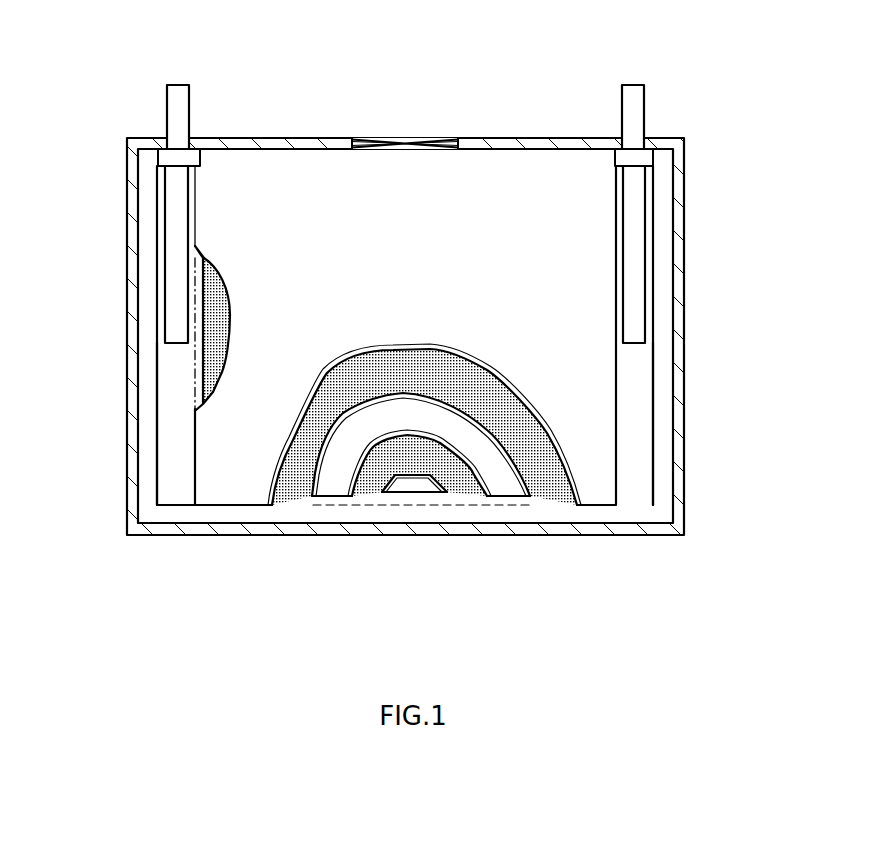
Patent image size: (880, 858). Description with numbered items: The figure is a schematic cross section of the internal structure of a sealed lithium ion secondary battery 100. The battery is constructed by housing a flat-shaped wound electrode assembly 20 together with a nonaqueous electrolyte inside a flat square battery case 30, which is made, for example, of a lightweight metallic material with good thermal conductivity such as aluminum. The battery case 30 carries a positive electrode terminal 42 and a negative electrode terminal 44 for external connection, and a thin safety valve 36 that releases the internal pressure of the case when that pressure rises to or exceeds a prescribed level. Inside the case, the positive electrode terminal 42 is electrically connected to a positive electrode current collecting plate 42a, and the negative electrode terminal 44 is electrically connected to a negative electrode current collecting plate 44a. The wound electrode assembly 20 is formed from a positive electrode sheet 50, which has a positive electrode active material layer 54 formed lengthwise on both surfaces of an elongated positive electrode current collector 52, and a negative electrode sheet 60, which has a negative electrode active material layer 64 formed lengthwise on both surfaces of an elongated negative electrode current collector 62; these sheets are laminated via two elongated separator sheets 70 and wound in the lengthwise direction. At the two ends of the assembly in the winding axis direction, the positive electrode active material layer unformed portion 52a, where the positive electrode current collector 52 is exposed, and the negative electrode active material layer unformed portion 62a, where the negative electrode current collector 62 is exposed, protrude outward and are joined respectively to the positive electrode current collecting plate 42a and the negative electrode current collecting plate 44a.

The lithium ion secondary battery 100 is at (686, 101).
The wound electrode assembly 20 is at (291, 194).
The battery case 30 is at (687, 248).
The safety valve 36 is at (405, 139).
The positive electrode terminal 42 is at (178, 90).
The positive electrode current collecting plate 42a is at (178, 232).
The negative electrode terminal 44 is at (633, 90).
The negative electrode current collecting plate 44a is at (633, 197).
The positive electrode sheet 50 is at (292, 490).
The positive electrode current collector 52 is at (157, 402).
The positive electrode active material layer unformed portion 52a is at (173, 477).
The positive electrode active material layer 54 is at (217, 300).
The negative electrode sheet 60 is at (372, 485).
The negative electrode current collector 62 is at (654, 358).
The negative electrode active material layer unformed portion 62a is at (640, 403).
The negative electrode active material layer 64 is at (417, 544).
The separator sheet 70 is at (233, 435).